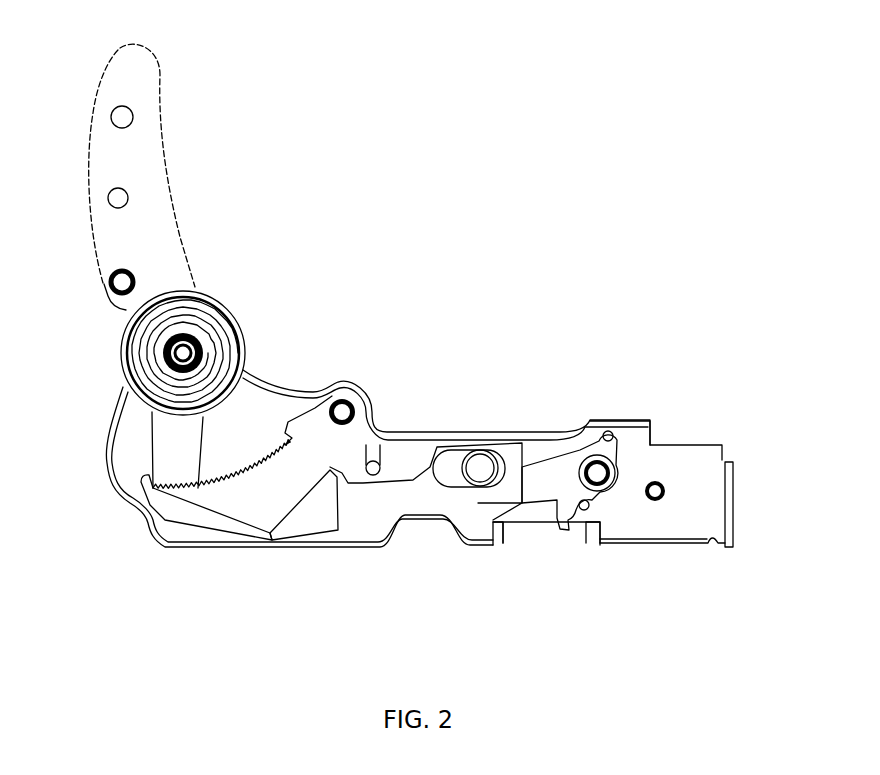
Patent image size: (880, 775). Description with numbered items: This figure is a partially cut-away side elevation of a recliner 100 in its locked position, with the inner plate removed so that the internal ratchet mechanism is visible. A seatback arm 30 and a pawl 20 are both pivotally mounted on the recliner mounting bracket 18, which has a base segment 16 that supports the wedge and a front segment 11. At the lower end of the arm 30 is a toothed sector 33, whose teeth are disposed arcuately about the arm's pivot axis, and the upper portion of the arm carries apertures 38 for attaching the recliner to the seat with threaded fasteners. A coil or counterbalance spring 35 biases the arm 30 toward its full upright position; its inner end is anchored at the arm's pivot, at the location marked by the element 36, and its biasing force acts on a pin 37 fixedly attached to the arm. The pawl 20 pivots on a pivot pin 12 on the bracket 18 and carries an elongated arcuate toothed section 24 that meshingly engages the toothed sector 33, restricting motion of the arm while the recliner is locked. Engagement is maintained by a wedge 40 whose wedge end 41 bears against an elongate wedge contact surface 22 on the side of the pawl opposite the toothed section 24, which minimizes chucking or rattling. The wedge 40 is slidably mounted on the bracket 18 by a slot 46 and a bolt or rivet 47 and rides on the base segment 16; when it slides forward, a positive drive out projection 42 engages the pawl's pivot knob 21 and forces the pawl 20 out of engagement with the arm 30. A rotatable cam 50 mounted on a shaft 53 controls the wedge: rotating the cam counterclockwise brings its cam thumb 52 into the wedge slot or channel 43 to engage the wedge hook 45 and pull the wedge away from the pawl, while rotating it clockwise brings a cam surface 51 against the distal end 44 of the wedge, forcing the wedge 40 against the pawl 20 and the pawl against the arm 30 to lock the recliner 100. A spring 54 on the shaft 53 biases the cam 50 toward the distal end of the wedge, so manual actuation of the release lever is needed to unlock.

The recliner 100 is at (470, 218).
The front segment 11 is at (735, 523).
The pivot pin 12 is at (340, 407).
The base segment 16 is at (675, 547).
The recliner mounting bracket 18 is at (650, 420).
The pawl 20 is at (312, 408).
The pivot knob 21 is at (377, 462).
The wedge contact surface 22 is at (284, 492).
The toothed section 24 is at (178, 505).
The seatback arm 30 is at (147, 125).
The toothed sector 33 is at (175, 492).
The spring 35 is at (115, 120).
The spiral spring 36 is at (200, 347).
The pin 37 is at (108, 282).
The apertures 38 is at (660, 487).
The wedge 40 is at (458, 445).
The wedge end 41 is at (296, 522).
The positive drive out projection 42 is at (340, 480).
The wedge slot or channel 43 is at (537, 532).
The distal end 44 is at (527, 460).
The wedge hook 45 is at (593, 533).
The slot 46 is at (455, 485).
The bolt or rivet 47 is at (480, 467).
The cam 50 is at (567, 467).
The cam surface 51 is at (513, 527).
The cam thumb 52 is at (562, 525).
The shaft 53 is at (604, 463).
The spring 54 is at (600, 470).